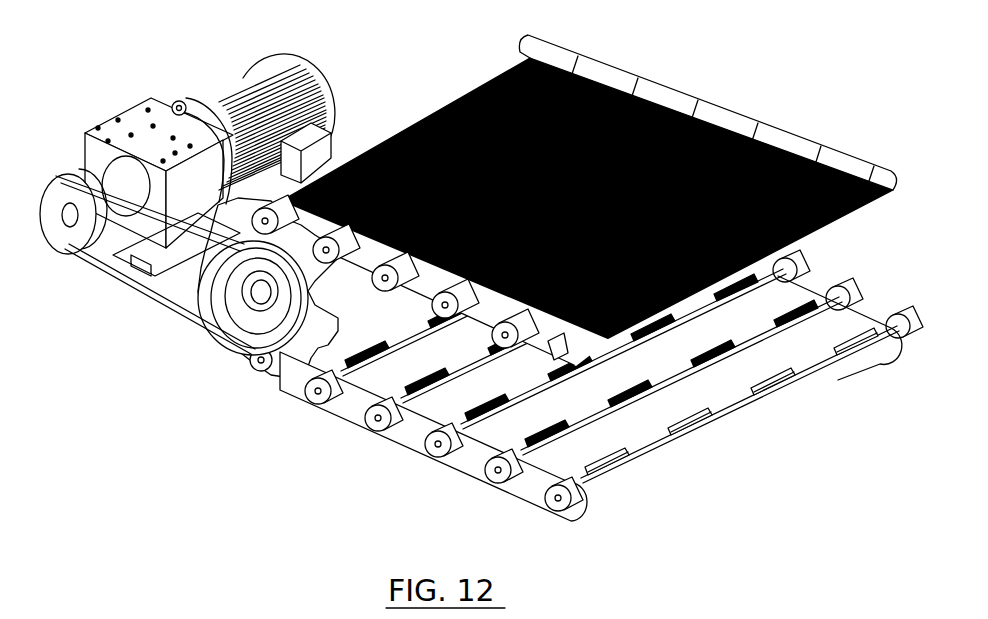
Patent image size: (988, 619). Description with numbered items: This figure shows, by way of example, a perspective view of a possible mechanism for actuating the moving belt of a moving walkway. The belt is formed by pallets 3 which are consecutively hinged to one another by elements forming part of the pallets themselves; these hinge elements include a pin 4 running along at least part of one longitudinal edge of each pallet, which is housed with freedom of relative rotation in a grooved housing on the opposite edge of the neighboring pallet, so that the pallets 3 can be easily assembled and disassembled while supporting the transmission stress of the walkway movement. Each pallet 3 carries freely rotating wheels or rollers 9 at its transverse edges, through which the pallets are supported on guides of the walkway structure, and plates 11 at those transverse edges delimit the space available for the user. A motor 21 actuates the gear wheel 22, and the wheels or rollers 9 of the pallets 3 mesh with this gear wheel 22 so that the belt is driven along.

The motor 21 is at (197, 82).
The gear wheel 22 is at (222, 300).
The wheels or rollers 9 is at (312, 381).
The plates 11 is at (407, 443).
The pallets 3 is at (623, 433).
The pin 4 is at (767, 387).